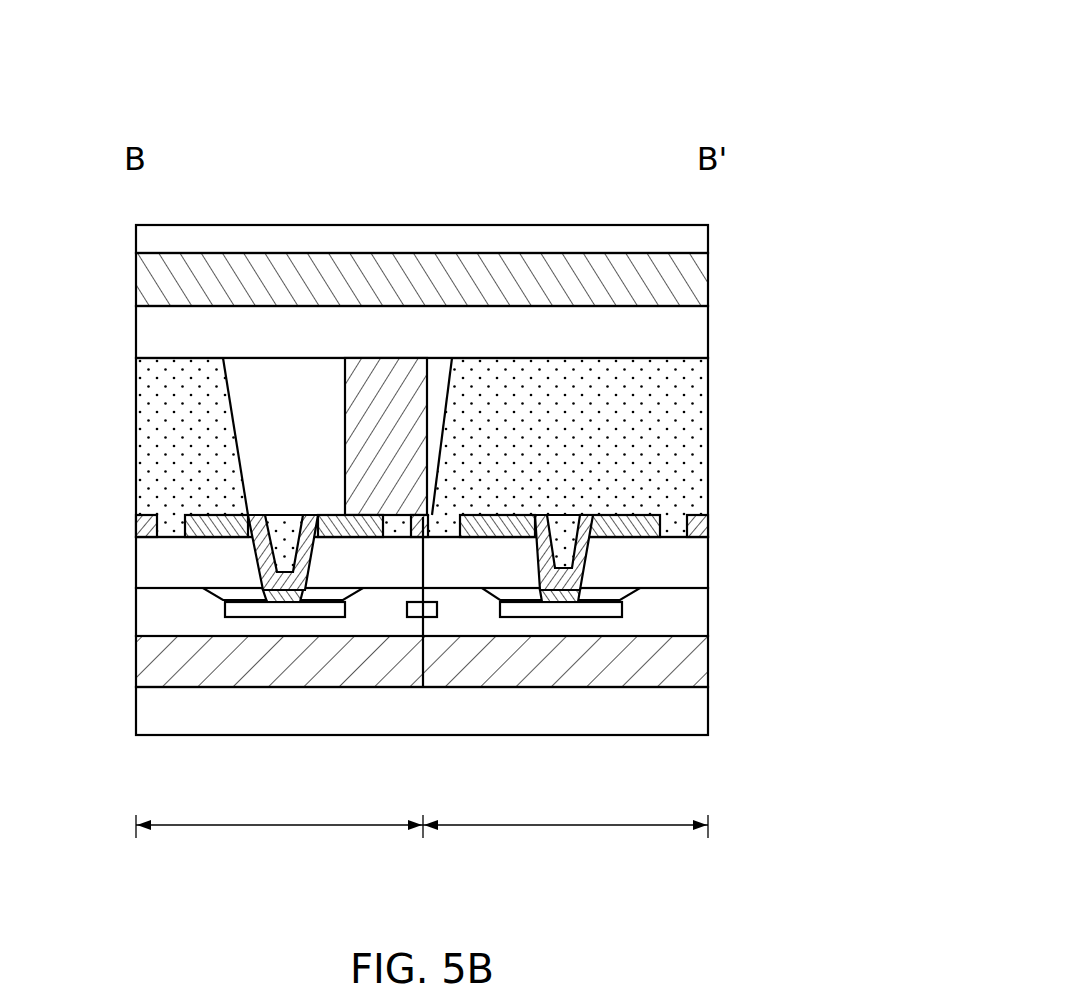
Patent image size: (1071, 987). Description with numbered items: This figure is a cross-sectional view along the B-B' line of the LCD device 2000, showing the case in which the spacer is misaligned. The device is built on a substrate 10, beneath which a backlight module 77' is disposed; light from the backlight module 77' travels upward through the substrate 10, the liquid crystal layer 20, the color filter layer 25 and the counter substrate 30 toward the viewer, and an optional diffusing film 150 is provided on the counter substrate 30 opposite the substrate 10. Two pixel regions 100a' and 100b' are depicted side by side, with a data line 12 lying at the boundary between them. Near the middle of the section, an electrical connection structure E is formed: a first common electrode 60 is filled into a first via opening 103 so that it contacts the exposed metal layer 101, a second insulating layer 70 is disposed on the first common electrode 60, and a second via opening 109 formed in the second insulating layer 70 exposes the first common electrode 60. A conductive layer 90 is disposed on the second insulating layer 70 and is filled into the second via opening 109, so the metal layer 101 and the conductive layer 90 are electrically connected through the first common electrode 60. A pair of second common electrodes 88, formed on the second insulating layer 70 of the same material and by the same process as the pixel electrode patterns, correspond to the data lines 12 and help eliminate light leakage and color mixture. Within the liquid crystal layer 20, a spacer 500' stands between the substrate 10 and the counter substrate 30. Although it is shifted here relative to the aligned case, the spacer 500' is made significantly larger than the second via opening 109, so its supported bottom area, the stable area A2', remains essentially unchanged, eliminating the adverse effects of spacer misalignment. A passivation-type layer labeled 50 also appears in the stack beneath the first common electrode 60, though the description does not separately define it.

The LCD device 2000 is at (674, 106).
The diffusing film 150 is at (697, 240).
The counter substrate 30 is at (697, 275).
The color filter layer 25 is at (697, 330).
The liquid crystal layer 20 is at (697, 377).
The stable area A2' is at (474, 436).
The spacer 500' is at (444, 436).
The second common electrodes 88 is at (145, 520).
The conductive layer 90 is at (212, 517).
The second insulating layer 70 is at (147, 553).
The first common electrode 60 is at (256, 580).
The passivation layer 50 is at (147, 606).
The second via opening 109 is at (256, 582).
The first via opening 103 is at (302, 612).
The metal layer 101 is at (552, 612).
The data lines 12 is at (430, 613).
The electrical connection structure E is at (561, 522).
The substrate 10 is at (697, 659).
The backlight module 77' is at (461, 711).
The pixel region 100b' is at (279, 842).
The pixel region 100a' is at (565, 842).